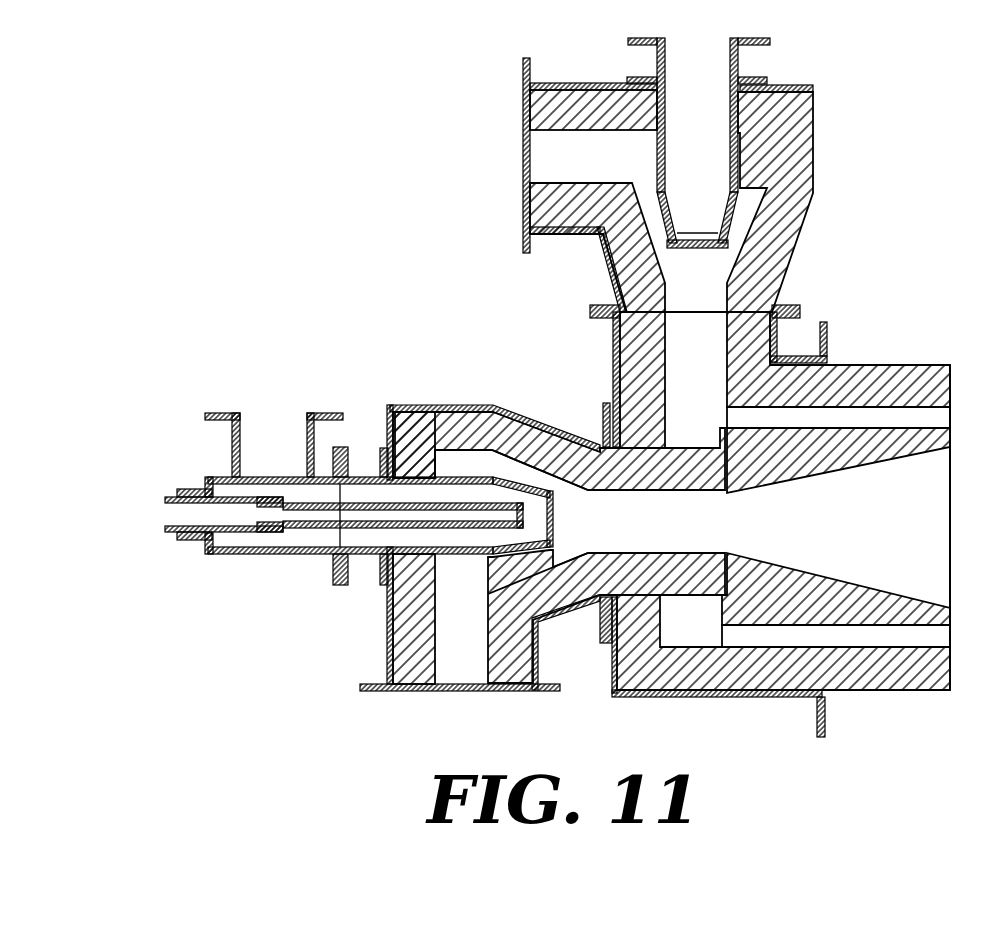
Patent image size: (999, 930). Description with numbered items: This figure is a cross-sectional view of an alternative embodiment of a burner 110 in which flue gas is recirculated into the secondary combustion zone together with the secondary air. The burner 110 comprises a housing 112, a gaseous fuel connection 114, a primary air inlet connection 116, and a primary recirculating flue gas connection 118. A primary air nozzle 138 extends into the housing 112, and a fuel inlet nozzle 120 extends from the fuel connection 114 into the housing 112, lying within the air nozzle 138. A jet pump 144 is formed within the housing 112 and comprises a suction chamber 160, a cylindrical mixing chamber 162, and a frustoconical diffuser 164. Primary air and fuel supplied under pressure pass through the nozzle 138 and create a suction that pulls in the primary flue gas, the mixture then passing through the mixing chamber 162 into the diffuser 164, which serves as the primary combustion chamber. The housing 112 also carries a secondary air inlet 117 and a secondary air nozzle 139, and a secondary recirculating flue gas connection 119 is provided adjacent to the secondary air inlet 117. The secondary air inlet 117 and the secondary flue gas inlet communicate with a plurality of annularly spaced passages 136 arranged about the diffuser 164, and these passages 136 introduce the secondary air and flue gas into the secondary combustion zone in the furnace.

The burner 110 is at (405, 375).
The housing 112 is at (857, 363).
The gaseous fuel connection 114 is at (167, 533).
The primary air inlet connection 116 is at (232, 446).
The secondary air inlet 117 is at (742, 69).
The primary recirculating flue gas connection 118 is at (387, 630).
The secondary recirculating flue gas connection 119 is at (580, 84).
The fuel inlet nozzle 120 is at (317, 530).
The annularly spaced passages 136 is at (919, 417).
The primary air nozzle 138 is at (540, 548).
The secondary air nozzle 139 is at (726, 228).
The jet pump 144 is at (584, 434).
The suction chamber 160 is at (570, 520).
The cylindrical mixing chamber 162 is at (672, 531).
The frustoconical diffuser 164 is at (877, 533).